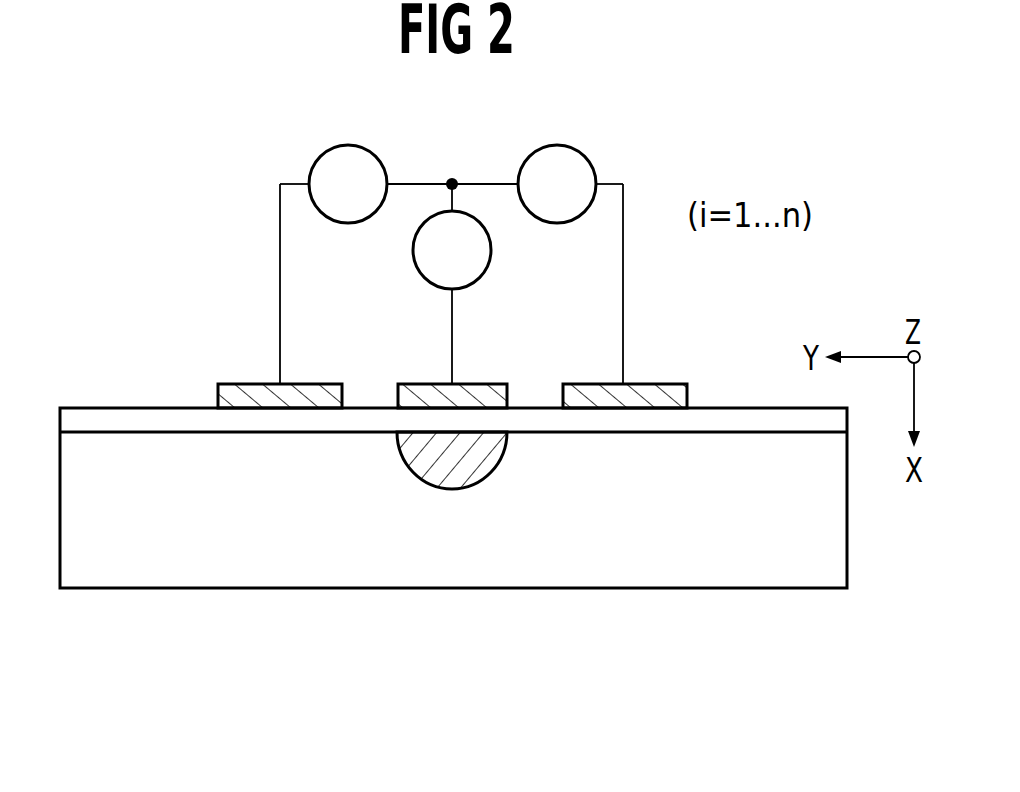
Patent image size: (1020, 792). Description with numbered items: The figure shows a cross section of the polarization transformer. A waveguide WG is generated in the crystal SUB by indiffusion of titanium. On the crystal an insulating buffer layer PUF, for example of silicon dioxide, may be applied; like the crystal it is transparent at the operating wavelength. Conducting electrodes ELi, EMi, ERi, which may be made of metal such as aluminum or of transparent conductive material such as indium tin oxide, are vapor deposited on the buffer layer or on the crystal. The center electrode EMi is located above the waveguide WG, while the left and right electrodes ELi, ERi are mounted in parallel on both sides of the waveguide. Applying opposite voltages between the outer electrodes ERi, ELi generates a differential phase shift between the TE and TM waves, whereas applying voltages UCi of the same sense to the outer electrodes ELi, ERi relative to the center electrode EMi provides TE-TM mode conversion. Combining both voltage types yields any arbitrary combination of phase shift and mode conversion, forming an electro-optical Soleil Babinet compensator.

The crystal SUB is at (224, 570).
The insulating buffer layer PUF is at (280, 418).
The waveguide WG is at (478, 466).
The left electrode ELi is at (232, 390).
The center electrode EMi is at (472, 390).
The right electrode ERi is at (663, 390).
The same-sense voltage UCi is at (400, 210).